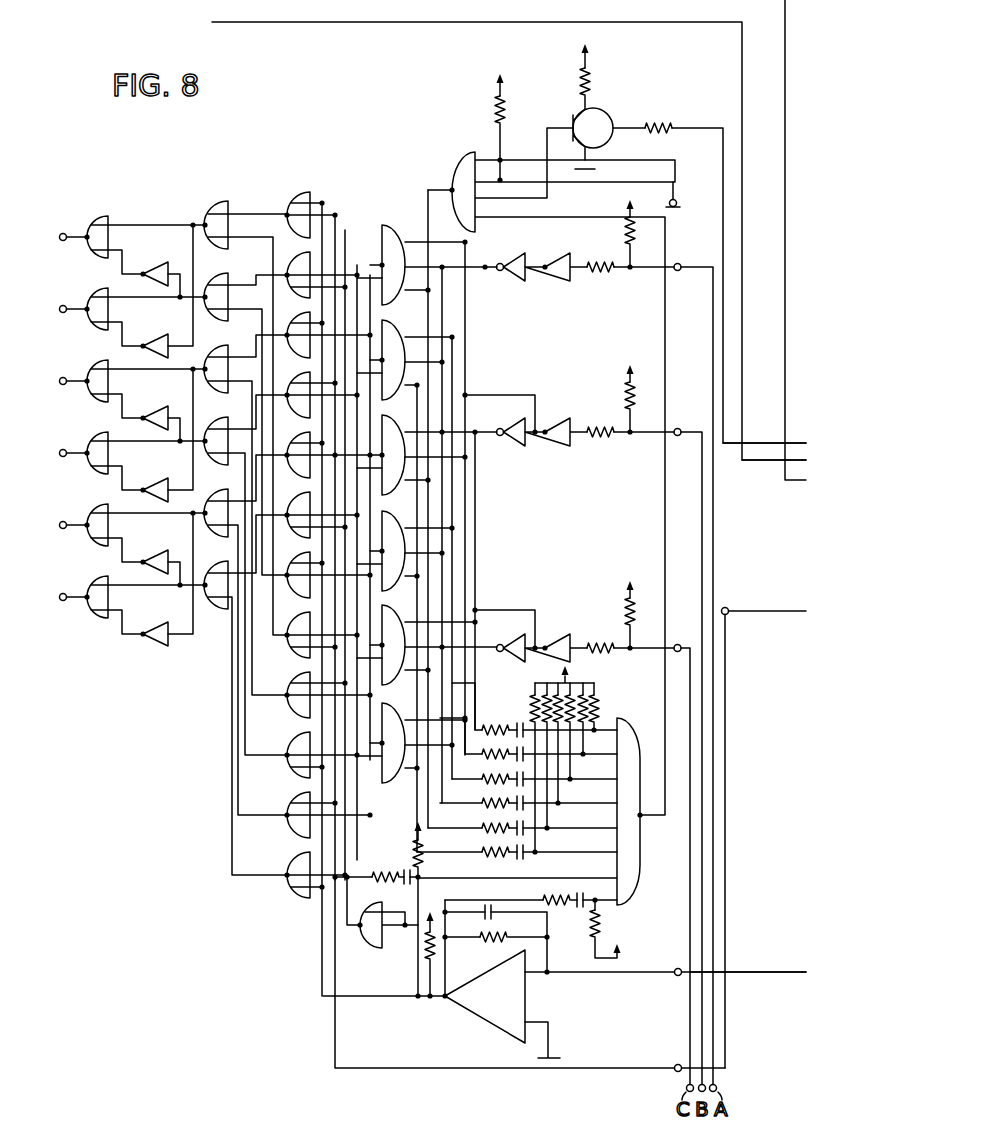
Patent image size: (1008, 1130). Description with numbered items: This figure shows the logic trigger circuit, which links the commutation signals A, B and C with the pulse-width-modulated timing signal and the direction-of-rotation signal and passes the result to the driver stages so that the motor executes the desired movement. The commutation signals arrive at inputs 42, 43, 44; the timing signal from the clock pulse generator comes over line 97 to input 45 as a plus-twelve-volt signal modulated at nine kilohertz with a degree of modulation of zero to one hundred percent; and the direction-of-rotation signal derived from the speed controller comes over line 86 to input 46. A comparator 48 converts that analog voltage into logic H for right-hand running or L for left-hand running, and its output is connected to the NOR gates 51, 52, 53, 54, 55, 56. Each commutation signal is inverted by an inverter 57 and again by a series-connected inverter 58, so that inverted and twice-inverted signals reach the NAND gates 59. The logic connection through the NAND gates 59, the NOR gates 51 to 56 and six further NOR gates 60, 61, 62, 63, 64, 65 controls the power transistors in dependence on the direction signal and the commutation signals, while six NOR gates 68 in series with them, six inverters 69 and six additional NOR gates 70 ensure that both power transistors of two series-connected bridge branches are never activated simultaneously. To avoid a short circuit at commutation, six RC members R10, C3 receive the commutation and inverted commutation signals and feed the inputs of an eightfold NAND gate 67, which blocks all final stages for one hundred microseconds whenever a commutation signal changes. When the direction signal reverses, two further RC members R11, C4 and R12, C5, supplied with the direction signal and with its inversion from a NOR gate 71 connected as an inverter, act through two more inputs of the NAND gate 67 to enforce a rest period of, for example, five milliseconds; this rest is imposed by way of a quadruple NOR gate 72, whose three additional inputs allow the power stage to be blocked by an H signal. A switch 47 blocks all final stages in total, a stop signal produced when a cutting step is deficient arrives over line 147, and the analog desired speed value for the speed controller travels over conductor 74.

The NOR gate 70 is at (105, 218).
The inverter 69 is at (155, 638).
The NOR gate 68 is at (218, 206).
The NOR gate 56 is at (305, 194).
The NOR gate 65 is at (294, 290).
The NOR gate 55 is at (294, 350).
The NOR gate 64 is at (294, 410).
The NOR gate 54 is at (294, 470).
The NOR gate 63 is at (294, 530).
The NOR gate 53 is at (294, 590).
The NOR gate 62 is at (294, 650).
The NOR gate 52 is at (294, 710).
The NOR gate 61 is at (294, 770).
The NOR gate 51 is at (294, 830).
The NOR gate 60 is at (294, 890).
The NAND gate 59 is at (392, 224).
The quadruple NOR gate 72 is at (466, 158).
The inverter 58 is at (506, 262).
The inverter 57 is at (560, 272).
The input 42 is at (676, 264).
The input 43 is at (674, 430).
The input 44 is at (668, 646).
The switch 47 is at (680, 202).
The line 147 is at (764, 443).
The conductor 74 is at (760, 462).
The line 97 is at (762, 613).
The capacitor C3 is at (519, 726).
The resistor R10 is at (598, 696).
The eightfold NAND gate 67 is at (636, 872).
The resistor R12 is at (381, 879).
The capacitor C5 is at (404, 872).
The NOR gate 71 is at (370, 946).
The comparator 48 is at (474, 1019).
The resistor R11 is at (548, 896).
The capacitor C4 is at (580, 914).
The input 46 is at (668, 968).
The input 45 is at (674, 1064).
The line 86 is at (778, 974).